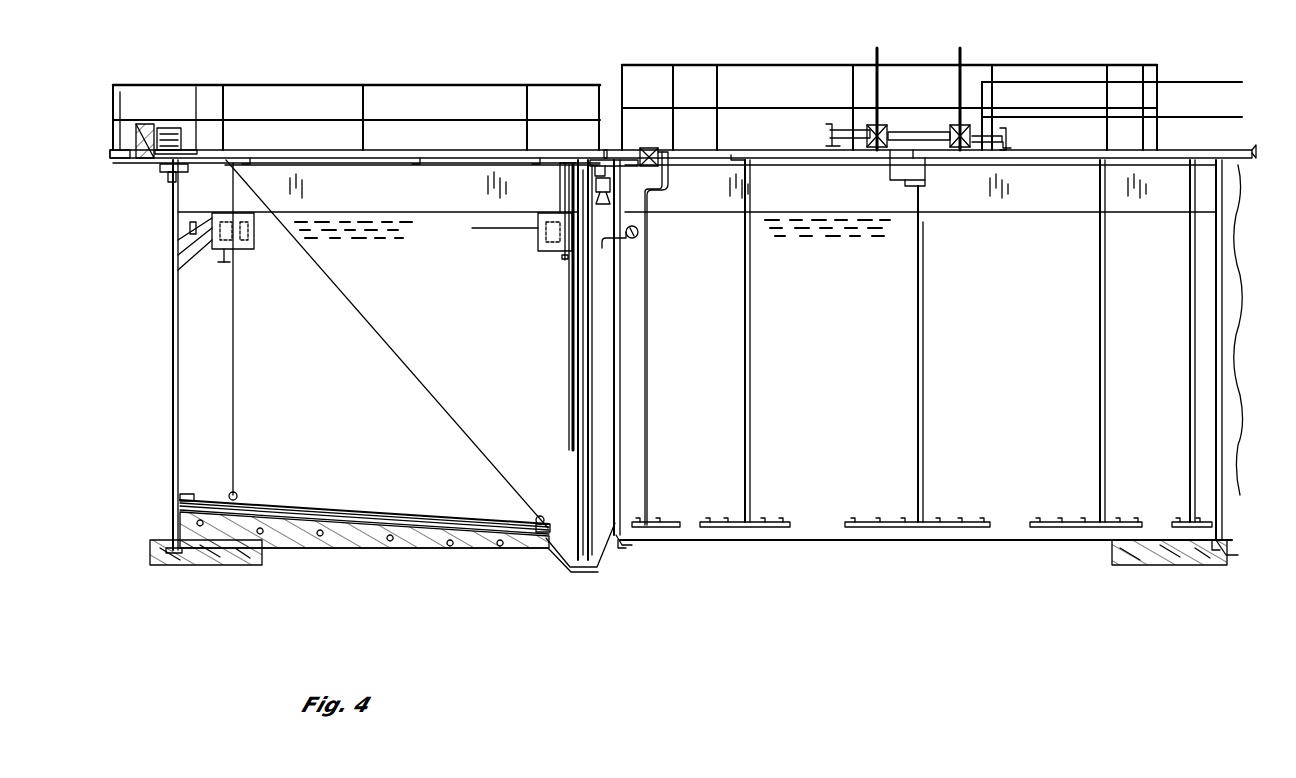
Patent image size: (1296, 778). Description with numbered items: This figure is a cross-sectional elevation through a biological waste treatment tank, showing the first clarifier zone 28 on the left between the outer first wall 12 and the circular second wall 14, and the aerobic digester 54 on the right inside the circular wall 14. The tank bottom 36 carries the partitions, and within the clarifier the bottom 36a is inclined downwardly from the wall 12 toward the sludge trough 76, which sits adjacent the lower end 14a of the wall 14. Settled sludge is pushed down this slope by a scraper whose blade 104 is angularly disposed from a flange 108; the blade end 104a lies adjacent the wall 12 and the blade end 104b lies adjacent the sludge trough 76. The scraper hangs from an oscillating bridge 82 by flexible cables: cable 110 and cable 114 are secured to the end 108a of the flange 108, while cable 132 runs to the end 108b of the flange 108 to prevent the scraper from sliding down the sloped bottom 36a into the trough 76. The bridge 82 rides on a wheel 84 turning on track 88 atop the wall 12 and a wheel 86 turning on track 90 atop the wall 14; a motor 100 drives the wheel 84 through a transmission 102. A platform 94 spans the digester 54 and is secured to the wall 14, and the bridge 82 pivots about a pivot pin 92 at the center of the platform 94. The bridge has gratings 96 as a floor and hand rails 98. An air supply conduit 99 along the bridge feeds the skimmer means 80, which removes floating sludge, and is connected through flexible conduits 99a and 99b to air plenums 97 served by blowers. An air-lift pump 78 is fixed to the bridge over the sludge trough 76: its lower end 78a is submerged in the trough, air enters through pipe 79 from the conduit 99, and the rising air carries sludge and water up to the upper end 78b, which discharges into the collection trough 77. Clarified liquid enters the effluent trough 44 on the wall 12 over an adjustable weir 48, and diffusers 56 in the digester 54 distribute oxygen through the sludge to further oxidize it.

The first wall 12 is at (172, 440).
The second wall 14 is at (1240, 345).
The lower end of wall 14 14a is at (625, 545).
The first clarifier zone 28 is at (205, 405).
The bottom 36 is at (445, 555).
The bottom of the clarifiers 36a is at (325, 548).
The effluent trough 44 is at (180, 262).
The adjustable weir 48 is at (185, 280).
The aerobic digester 54 is at (1000, 500).
The diffusers 56 is at (655, 395).
The sludge trough 76 is at (565, 565).
The collection trough 77 is at (630, 212).
The air-lift pump 78 is at (578, 355).
The lower end of pump 78 78a is at (620, 520).
The upper end of pump 78 78b is at (575, 172).
The pipe 79 is at (578, 380).
The skimmer means 80 is at (478, 228).
The oscillating bridge 82 is at (130, 168).
The wheel 84 is at (165, 173).
The wheel 86 is at (608, 150).
The track 88 is at (170, 178).
The track 90 is at (650, 158).
The pivot pin 92 is at (918, 184).
The platform 94 is at (915, 128).
The gratings 96 is at (383, 150).
The air plenums 97 is at (880, 125).
The hand rails 98 is at (403, 85).
The air supply conduit 99 is at (403, 165).
The flexible conduit 99a is at (840, 130).
The flexible conduit 99b is at (1005, 134).
The motor 100 is at (170, 130).
The transmission 102 is at (130, 140).
The blade 104 is at (362, 500).
The end of blade 104 104a is at (198, 498).
The end of blade 104 104b is at (547, 530).
The flange 108 is at (415, 512).
The end of flange 108 108a is at (235, 492).
The end of flange 108 108b is at (535, 512).
The cable 110 is at (238, 345).
The cable 114 is at (540, 350).
The cable 132 is at (388, 335).